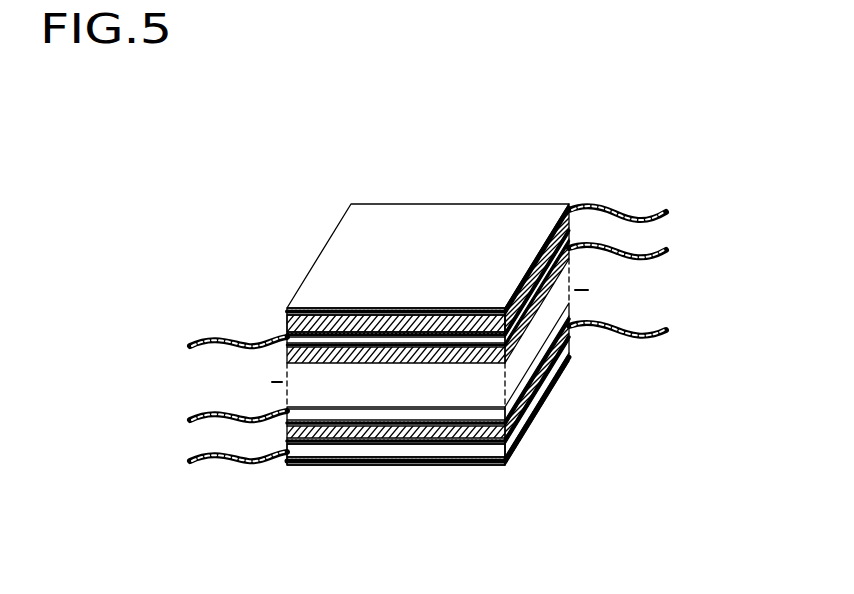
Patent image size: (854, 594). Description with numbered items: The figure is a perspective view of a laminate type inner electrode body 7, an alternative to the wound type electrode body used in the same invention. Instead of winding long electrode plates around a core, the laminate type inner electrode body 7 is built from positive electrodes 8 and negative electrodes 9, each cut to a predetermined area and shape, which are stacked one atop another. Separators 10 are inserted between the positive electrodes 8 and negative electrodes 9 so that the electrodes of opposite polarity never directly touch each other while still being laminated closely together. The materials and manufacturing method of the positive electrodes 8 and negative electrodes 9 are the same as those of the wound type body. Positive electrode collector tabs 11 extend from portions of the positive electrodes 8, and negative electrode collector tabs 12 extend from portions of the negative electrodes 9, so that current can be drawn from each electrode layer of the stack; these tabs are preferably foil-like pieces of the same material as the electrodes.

The laminate type inner electrode body 7 is at (370, 193).
The positive electrodes 8 is at (287, 322).
The negative electrodes 9 is at (375, 448).
The separators 10 is at (458, 465).
The positive electrode collector tabs 11 is at (662, 255).
The negative electrode collector tabs 12 is at (205, 335).